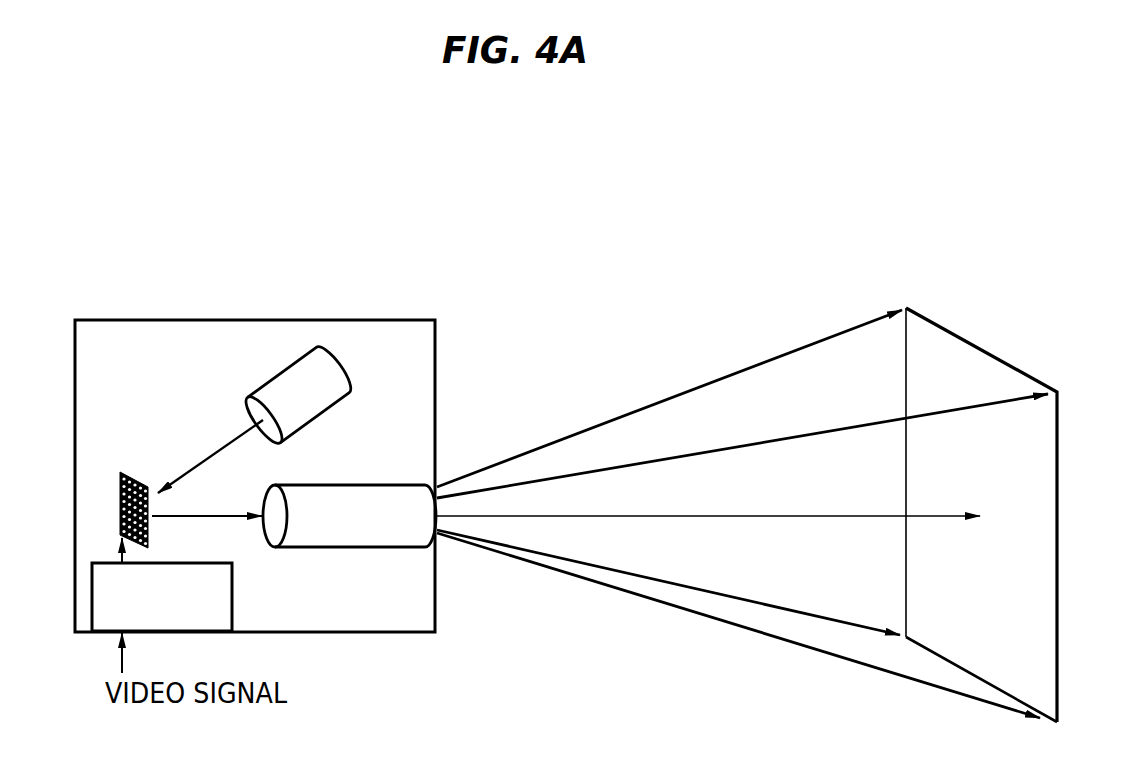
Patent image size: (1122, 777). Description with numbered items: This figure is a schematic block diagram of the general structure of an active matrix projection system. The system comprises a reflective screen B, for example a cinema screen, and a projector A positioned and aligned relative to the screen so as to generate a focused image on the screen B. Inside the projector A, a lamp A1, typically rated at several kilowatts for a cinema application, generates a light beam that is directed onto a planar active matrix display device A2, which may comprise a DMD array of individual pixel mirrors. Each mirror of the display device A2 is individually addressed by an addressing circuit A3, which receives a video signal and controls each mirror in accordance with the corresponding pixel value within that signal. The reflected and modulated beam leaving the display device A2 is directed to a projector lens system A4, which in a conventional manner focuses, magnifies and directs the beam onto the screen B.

The projector A is at (352, 320).
The lamp A1 is at (340, 400).
The planar active matrix display device A2 is at (130, 473).
The addressing circuit A3 is at (234, 604).
The projector lens system A4 is at (423, 549).
The reflective screen B is at (950, 328).